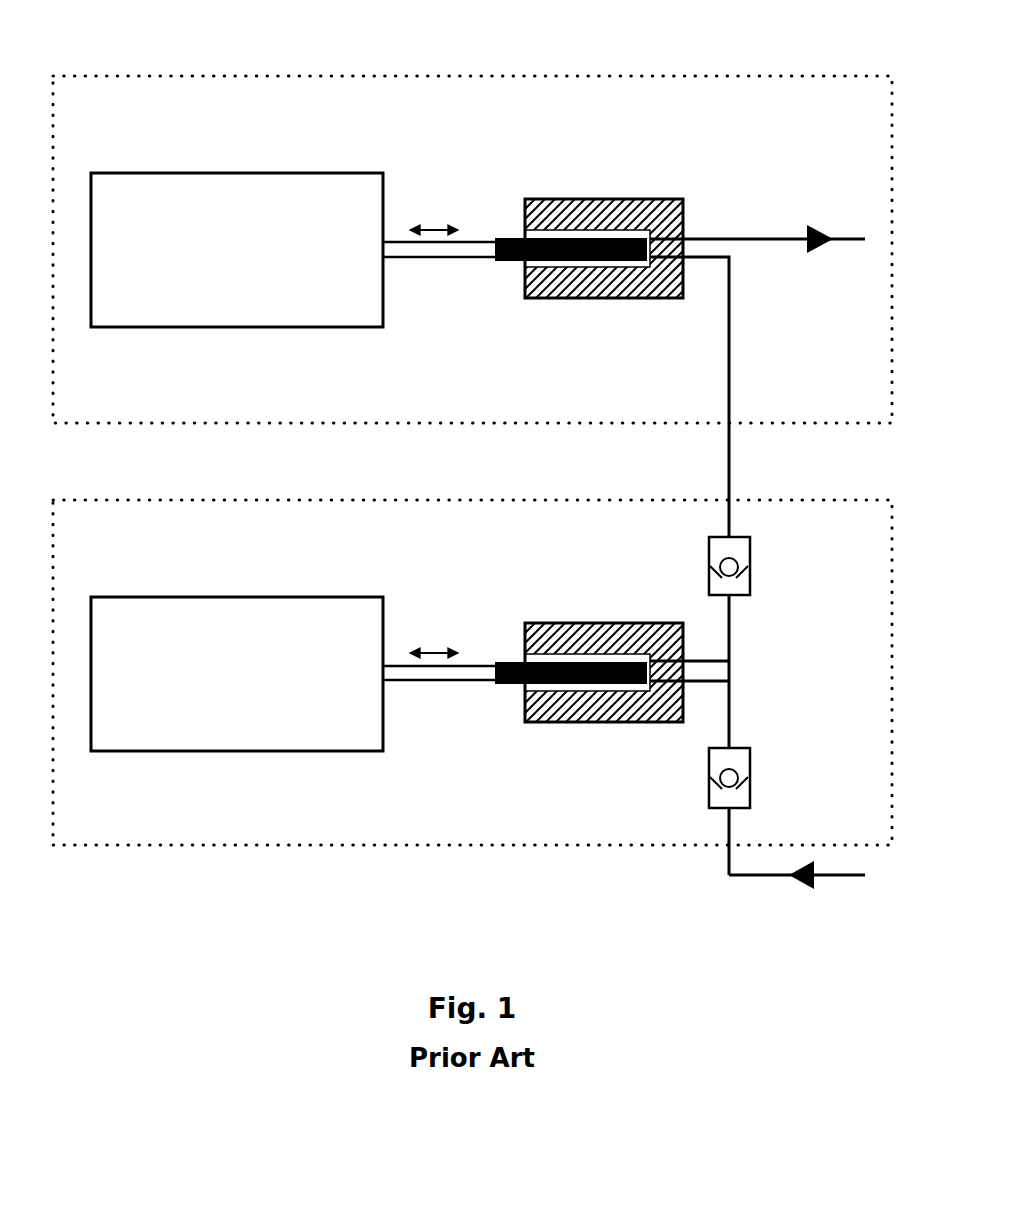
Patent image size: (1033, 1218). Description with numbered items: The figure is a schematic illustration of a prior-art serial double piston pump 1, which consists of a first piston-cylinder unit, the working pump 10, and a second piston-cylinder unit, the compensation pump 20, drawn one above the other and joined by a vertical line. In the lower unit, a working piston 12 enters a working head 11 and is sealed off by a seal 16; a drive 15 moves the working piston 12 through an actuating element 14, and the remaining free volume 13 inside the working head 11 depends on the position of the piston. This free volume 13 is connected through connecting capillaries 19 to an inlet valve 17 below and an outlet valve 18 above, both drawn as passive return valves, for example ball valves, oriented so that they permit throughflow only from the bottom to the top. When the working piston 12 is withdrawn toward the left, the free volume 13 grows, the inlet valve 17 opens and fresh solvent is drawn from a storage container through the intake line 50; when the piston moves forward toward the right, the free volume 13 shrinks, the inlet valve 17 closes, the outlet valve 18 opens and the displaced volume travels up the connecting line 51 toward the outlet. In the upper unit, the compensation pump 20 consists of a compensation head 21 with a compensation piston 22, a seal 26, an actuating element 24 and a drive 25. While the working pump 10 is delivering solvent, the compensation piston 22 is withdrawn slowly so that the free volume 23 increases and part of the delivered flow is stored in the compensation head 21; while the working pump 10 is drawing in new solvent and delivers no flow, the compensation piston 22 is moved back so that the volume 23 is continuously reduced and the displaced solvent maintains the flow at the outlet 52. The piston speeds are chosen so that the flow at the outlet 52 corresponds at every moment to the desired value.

The serial double piston pump 1 is at (776, 60).
The working pump 10 is at (187, 848).
The working head 11 is at (595, 724).
The working piston 12 is at (506, 686).
The free volume 13 is at (650, 686).
The actuating element 14 is at (425, 677).
The drive 15 is at (237, 674).
The seal 16 is at (524, 660).
The inlet valve 17 is at (750, 797).
The outlet valve 18 is at (750, 585).
The connecting capillaries 19 is at (730, 640).
The compensation pump 20 is at (187, 424).
The compensation head 21 is at (595, 300).
The compensation piston 22 is at (506, 262).
The free volume 23 is at (650, 262).
The actuating element 24 is at (425, 253).
The drive 25 is at (237, 250).
The seal 26 is at (524, 236).
The intake line 50 is at (781, 880).
The connecting line 51 is at (731, 457).
The outlet 52 is at (735, 238).